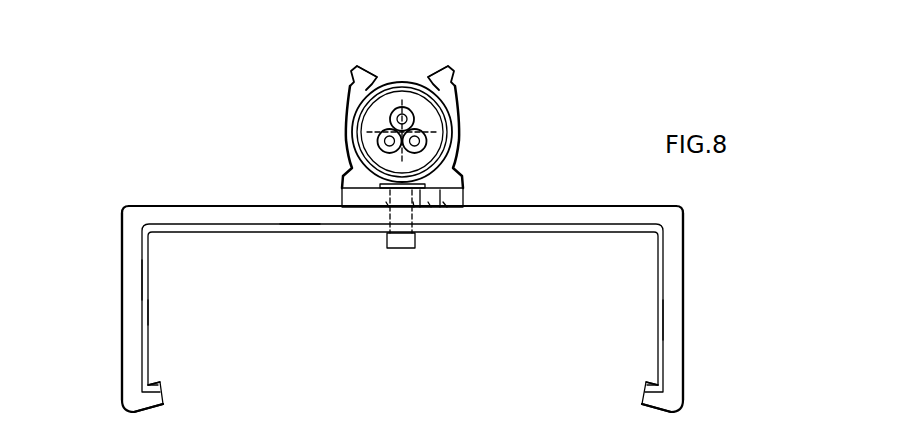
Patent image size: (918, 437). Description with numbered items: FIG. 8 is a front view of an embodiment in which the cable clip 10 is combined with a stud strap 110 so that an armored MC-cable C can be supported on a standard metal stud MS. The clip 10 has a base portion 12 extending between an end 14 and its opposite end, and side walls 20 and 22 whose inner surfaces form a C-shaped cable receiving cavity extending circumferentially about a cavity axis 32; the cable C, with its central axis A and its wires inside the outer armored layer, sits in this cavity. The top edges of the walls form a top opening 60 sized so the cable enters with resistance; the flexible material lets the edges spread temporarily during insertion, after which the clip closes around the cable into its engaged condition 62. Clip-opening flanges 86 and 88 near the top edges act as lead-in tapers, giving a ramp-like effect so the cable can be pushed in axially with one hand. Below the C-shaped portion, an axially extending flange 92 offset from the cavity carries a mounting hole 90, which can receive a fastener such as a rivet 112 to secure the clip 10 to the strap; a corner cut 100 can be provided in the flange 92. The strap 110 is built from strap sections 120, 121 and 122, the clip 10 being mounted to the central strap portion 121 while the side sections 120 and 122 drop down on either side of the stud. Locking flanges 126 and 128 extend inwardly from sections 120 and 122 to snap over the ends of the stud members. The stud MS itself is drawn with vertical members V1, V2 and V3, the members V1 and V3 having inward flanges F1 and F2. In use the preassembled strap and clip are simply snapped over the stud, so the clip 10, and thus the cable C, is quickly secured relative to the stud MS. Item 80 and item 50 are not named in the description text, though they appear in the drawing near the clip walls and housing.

The clip 10 is at (502, 108).
The base portion 12 is at (462, 198).
The end 14 is at (427, 202).
The side wall 20 is at (353, 124).
The side wall 22 is at (460, 129).
The cavity axis 32 is at (395, 120).
The housing 50 is at (342, 131).
The top opening 60 is at (410, 63).
The engaged condition 62 is at (345, 52).
The liner 80 is at (356, 95).
The clip-opening flange 86 is at (360, 70).
The clip-opening flange 88 is at (452, 68).
The mounting hole 90 is at (390, 205).
The axially extending flange 92 is at (442, 202).
The corner cut 100 is at (355, 199).
The stud strap 110 is at (686, 252).
The rivet 112 is at (403, 250).
The strap section 120 is at (140, 285).
The strap portion 121 is at (178, 213).
The strap section 122 is at (675, 303).
The locking flange 126 is at (150, 398).
The locking flange 128 is at (643, 408).
The MC-cable C is at (440, 102).
The vertical member V1 is at (150, 270).
The vertical member V2 is at (300, 235).
The vertical member V3 is at (658, 321).
The metal stud MS is at (148, 312).
The inward flange F1 is at (153, 383).
The inward flange F2 is at (655, 382).